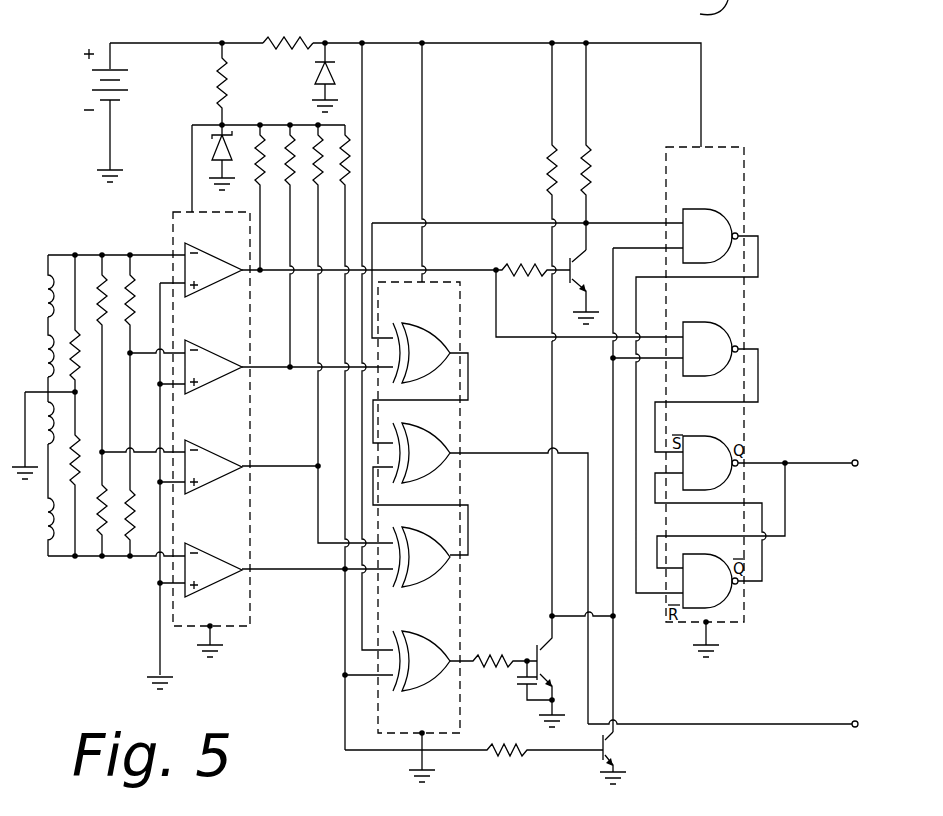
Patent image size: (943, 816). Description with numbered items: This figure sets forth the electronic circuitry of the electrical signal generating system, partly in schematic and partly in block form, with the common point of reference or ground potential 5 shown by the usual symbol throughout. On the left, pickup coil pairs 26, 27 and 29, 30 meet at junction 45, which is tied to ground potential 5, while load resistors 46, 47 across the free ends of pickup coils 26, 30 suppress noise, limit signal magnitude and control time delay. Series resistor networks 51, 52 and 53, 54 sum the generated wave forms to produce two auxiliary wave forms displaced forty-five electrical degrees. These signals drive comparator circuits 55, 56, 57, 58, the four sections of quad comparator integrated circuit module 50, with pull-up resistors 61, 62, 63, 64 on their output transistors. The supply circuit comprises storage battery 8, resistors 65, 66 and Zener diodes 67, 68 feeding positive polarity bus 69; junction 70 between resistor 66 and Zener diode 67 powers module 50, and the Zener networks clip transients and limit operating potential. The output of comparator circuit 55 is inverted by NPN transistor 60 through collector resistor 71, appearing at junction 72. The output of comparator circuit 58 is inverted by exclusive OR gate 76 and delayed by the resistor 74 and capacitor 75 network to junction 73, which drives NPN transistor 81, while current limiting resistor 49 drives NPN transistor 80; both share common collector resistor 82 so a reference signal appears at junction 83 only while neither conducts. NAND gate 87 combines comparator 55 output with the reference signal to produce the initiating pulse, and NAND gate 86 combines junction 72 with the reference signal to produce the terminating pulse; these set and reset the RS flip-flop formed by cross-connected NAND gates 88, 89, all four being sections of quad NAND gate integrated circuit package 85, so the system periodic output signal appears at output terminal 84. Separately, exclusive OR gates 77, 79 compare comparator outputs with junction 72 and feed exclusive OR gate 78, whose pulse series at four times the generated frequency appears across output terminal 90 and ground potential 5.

The point of reference or ground potential 5 is at (105, 182).
The storage battery 8 is at (86, 78).
The pickup coil 26 is at (46, 290).
The pickup coil 27 is at (46, 360).
The pickup coil 29 is at (48, 462).
The pickup coil 30 is at (46, 540).
The junction 45 is at (48, 392).
The load resistor 46 is at (76, 380).
The load resistor 47 is at (89, 474).
The current limiting resistor 49 is at (522, 752).
The quad comparator integrated circuit module 50 is at (173, 220).
The series resistor 51 is at (132, 316).
The series resistor 52 is at (134, 508).
The series resistor 53 is at (106, 302).
The series resistor 54 is at (115, 504).
The comparator circuit 55 is at (212, 274).
The comparator circuit 56 is at (212, 478).
The comparator circuit 57 is at (212, 372).
The comparator circuit 58 is at (212, 578).
The NPN transistor 60 is at (576, 262).
The pull-up resistor 61 is at (275, 197).
The pull-up resistor 62 is at (305, 246).
The pull-up resistor 63 is at (353, 334).
The pull-up resistor 64 is at (348, 140).
The resistor 65 is at (275, 47).
The resistor 66 is at (216, 70).
The Zener diode 67 is at (235, 162).
The Zener diode 68 is at (318, 66).
The positive polarity bus 69 is at (382, 43).
The junction 70 is at (218, 128).
The collector resistor 71 is at (590, 168).
The junction 72 is at (592, 222).
The junction 73 is at (554, 648).
The resistor 74 is at (493, 657).
The capacitor 75 is at (518, 682).
The exclusive OR gate 76 is at (434, 675).
The exclusive OR gate 77 is at (440, 560).
The exclusive OR gate 78 is at (440, 450).
The exclusive OR gate 79 is at (432, 333).
The NPN transistor 80 is at (615, 742).
The NPN transistor 81 is at (542, 660).
The common collector resistor 82 is at (548, 175).
The junction 83 is at (614, 618).
The output terminal 84 is at (858, 460).
The quad NAND gate integrated circuit package 85 is at (746, 157).
The NAND gate 86 is at (698, 215).
The NAND gate 87 is at (700, 330).
The NAND gate 88 is at (700, 440).
The NAND gate 89 is at (712, 598).
The output terminal 90 is at (855, 720).